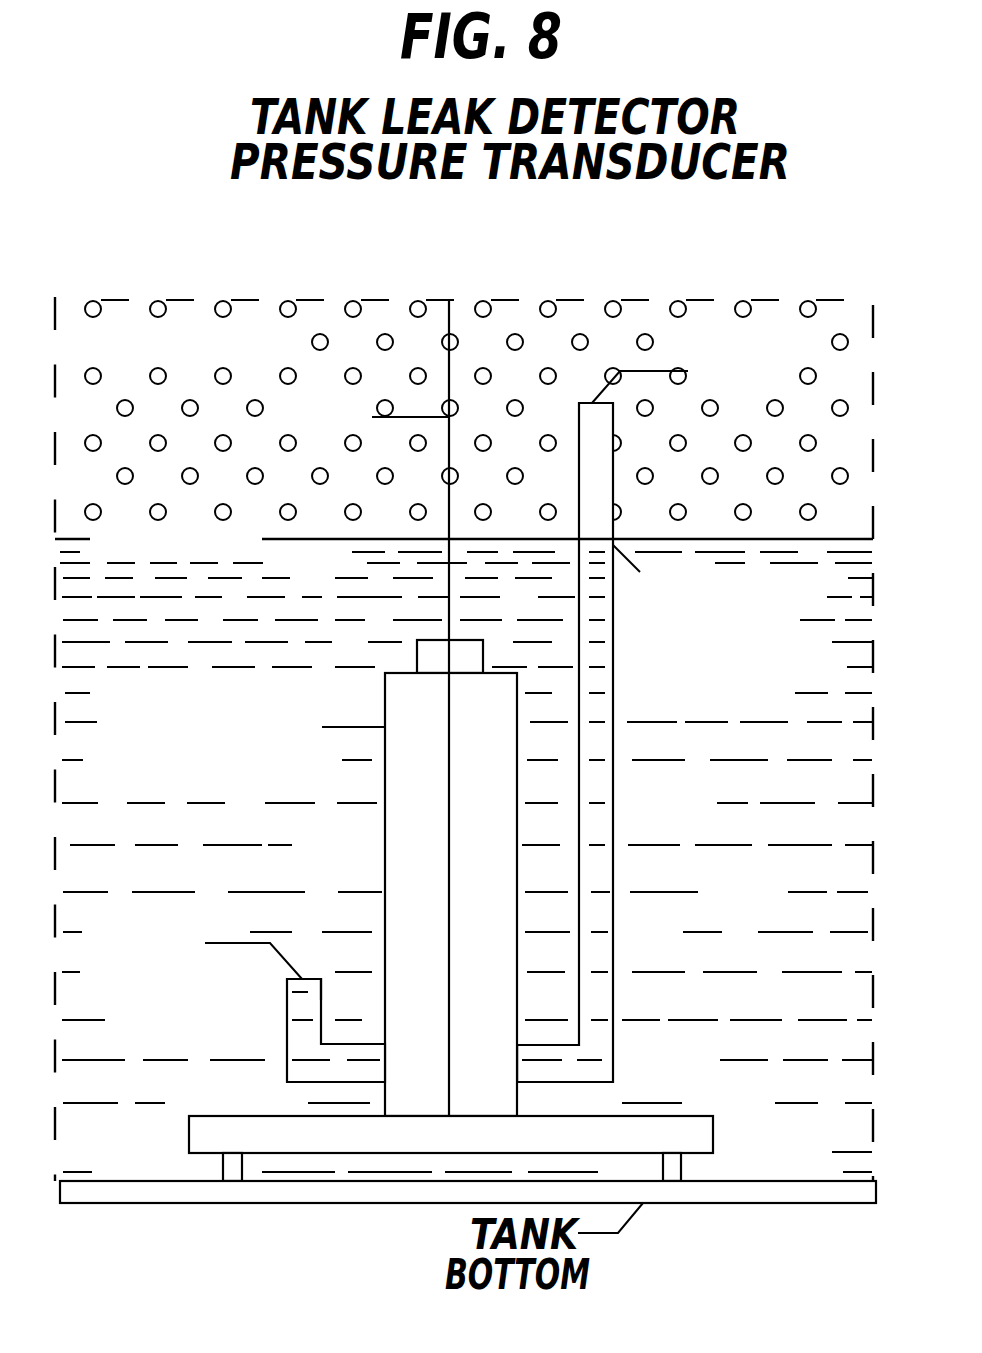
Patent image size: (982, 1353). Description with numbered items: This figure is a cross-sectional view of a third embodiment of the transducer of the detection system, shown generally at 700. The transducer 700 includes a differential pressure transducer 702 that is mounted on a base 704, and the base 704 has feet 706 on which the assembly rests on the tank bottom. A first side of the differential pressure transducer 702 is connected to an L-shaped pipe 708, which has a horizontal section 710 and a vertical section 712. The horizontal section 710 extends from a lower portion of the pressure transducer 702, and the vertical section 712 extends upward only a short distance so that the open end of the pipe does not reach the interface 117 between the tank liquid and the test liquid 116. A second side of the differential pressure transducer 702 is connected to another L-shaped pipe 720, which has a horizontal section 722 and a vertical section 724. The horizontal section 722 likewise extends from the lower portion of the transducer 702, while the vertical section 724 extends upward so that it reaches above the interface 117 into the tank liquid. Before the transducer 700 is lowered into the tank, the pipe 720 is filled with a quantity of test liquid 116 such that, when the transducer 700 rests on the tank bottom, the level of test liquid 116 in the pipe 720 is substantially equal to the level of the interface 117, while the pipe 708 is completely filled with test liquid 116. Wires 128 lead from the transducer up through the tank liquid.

The transducer 700 is at (165, 260).
The wires 128 is at (450, 306).
The interface 117 is at (345, 538).
The test liquid 116 is at (115, 846).
The differential pressure transducer 702 is at (385, 841).
The vertical section 724 is at (614, 838).
The horizontal section 722 is at (598, 1083).
The L-shaped pipe 720 is at (658, 926).
The L-shaped pipe 708 is at (258, 1027).
The vertical section 712 is at (287, 994).
The horizontal section 710 is at (300, 1083).
The base 704 is at (687, 1116).
The feet 706 is at (222, 1166).